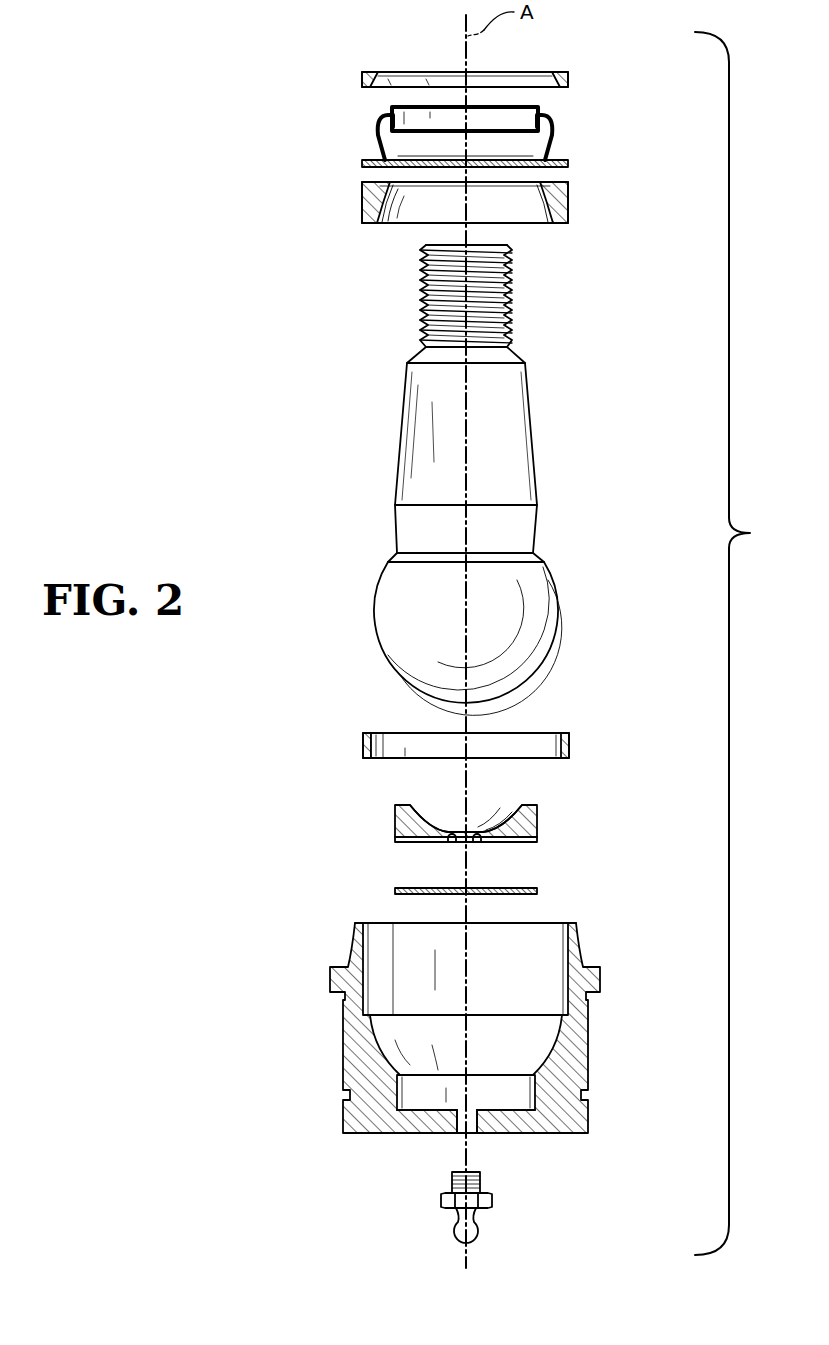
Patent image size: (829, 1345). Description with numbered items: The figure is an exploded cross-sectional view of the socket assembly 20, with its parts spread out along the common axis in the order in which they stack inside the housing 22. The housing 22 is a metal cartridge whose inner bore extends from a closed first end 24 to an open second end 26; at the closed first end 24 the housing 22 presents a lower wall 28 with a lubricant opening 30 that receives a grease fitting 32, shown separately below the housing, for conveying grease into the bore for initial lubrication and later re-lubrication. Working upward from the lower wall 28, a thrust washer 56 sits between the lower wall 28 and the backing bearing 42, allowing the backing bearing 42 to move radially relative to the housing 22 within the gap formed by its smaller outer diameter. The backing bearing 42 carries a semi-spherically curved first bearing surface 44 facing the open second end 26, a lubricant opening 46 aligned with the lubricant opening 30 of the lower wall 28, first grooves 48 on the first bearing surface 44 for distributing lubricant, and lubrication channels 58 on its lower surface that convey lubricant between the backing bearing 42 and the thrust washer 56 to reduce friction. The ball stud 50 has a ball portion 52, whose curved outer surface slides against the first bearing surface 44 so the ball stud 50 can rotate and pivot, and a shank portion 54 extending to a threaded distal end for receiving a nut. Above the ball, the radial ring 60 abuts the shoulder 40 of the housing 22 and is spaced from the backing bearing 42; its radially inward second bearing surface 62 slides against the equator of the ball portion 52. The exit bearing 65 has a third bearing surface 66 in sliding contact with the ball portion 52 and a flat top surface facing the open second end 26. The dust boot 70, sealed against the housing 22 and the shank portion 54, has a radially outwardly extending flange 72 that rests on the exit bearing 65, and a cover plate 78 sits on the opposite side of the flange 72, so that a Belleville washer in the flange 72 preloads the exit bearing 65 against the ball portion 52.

The socket assembly 20 is at (268, 318).
The housing 22 is at (416, 1042).
The closed first end 24 is at (533, 1133).
The open second end 26 is at (552, 923).
The lower wall 28 is at (402, 1133).
The lubricant opening 30 is at (460, 1133).
The grease fitting 32 is at (476, 1213).
The shoulder 40 is at (352, 1000).
The backing bearing 42 is at (439, 826).
The first bearing surface 44 is at (410, 808).
The lubricant opening 46 is at (481, 838).
The first grooves 48 is at (510, 820).
The ball stud 50 is at (477, 480).
The ball portion 52 is at (508, 608).
The shank portion 54 is at (430, 436).
The thrust washer 56 is at (420, 893).
The lubrication channels 58 is at (417, 847).
The radial ring 60 is at (494, 705).
The second bearing surface 62 is at (387, 740).
The exit bearing 65 is at (431, 228).
The third bearing surface 66 is at (560, 223).
The dust boot 70 is at (575, 110).
The radially outwardly extending flange 72 is at (557, 166).
The cover plate 78 is at (368, 72).